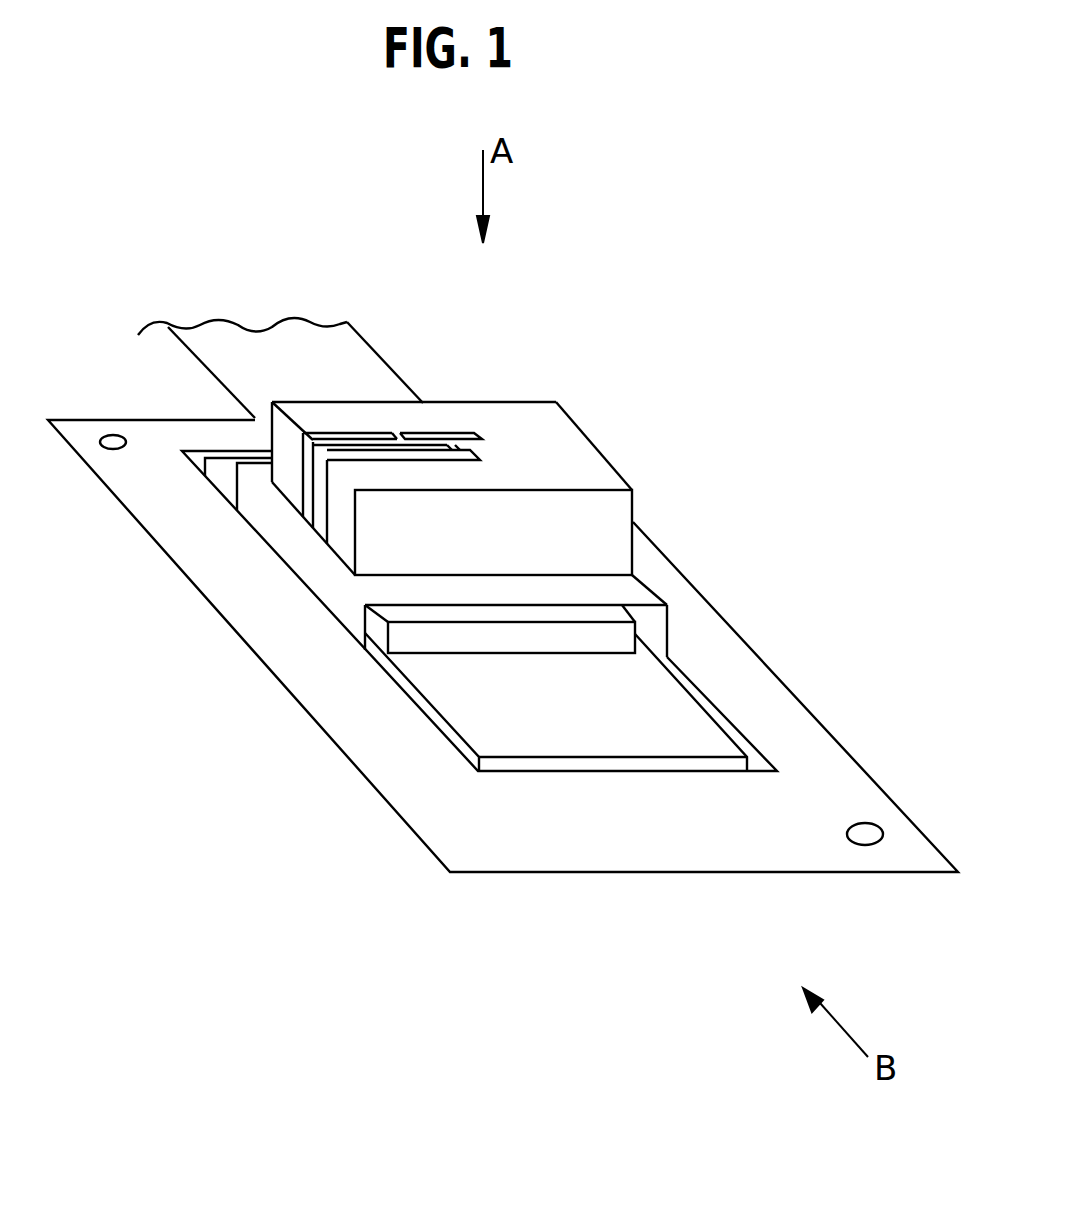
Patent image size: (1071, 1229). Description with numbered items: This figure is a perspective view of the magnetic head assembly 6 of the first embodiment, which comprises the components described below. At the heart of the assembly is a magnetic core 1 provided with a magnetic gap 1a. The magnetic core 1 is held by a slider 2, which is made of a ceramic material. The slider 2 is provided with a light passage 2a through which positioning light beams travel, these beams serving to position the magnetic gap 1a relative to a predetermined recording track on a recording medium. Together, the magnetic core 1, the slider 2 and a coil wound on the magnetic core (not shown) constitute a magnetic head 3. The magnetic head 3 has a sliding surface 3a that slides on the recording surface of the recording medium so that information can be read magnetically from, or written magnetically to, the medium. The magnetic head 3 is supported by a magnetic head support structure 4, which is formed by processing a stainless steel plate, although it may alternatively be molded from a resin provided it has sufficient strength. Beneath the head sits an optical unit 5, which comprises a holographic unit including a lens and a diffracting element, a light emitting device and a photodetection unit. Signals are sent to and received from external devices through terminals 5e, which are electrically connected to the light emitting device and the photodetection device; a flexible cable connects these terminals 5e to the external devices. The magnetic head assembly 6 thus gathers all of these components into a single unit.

The magnetic core 1 is at (467, 430).
The magnetic gap 1a is at (403, 433).
The slider 2 is at (588, 463).
The light passage 2a is at (325, 495).
The magnetic head 3 is at (556, 420).
The sliding surface 3a is at (617, 480).
The magnetic head support structure 4 is at (752, 670).
The optical unit 5 is at (727, 753).
The terminals 5e is at (337, 357).
The magnetic head assembly 6 is at (752, 537).